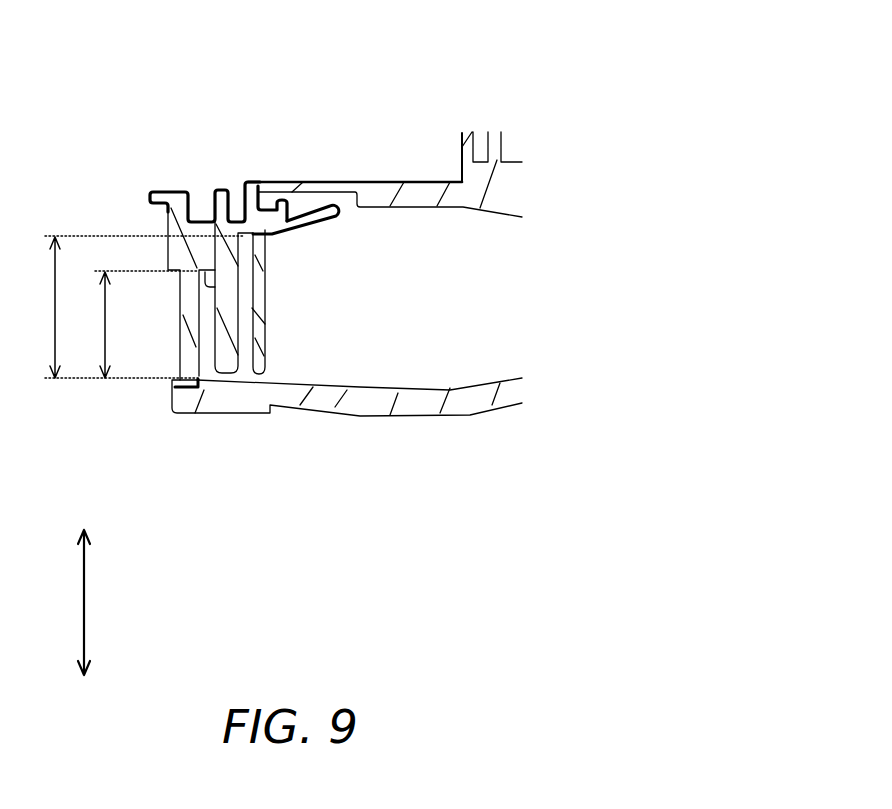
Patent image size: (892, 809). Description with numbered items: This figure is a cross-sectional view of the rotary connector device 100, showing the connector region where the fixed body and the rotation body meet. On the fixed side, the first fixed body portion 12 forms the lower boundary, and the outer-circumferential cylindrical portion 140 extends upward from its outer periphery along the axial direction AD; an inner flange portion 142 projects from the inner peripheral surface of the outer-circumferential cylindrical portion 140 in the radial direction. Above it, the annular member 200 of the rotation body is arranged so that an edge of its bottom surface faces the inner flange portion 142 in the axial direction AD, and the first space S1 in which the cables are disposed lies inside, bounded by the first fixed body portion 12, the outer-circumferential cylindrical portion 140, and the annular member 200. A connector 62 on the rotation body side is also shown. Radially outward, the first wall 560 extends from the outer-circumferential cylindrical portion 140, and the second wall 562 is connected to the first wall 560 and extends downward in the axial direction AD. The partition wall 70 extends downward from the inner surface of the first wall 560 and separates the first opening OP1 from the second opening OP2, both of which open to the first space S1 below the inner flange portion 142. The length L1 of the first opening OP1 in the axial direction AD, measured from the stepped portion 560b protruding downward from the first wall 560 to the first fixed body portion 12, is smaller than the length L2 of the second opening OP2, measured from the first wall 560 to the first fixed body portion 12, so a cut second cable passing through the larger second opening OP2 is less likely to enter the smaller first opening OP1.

The first wall 560 is at (240, 228).
The stepped portion 560b is at (215, 287).
The inner flange portion 142 is at (300, 214).
The annular member 200 is at (364, 190).
The connector 62 is at (462, 143).
The rotary connector device 100 is at (600, 103).
The second wall 562 is at (193, 347).
The partition wall 70 is at (226, 362).
The outer-circumferential cylindrical portion 140 is at (258, 327).
The first opening OP1 is at (210, 371).
The second opening OP2 is at (246, 371).
The first fixed body portion 12 is at (332, 402).
The first space S1 is at (470, 300).
The length L1 is at (138, 324).
The length L2 is at (138, 307).
The axial direction AD is at (85, 593).